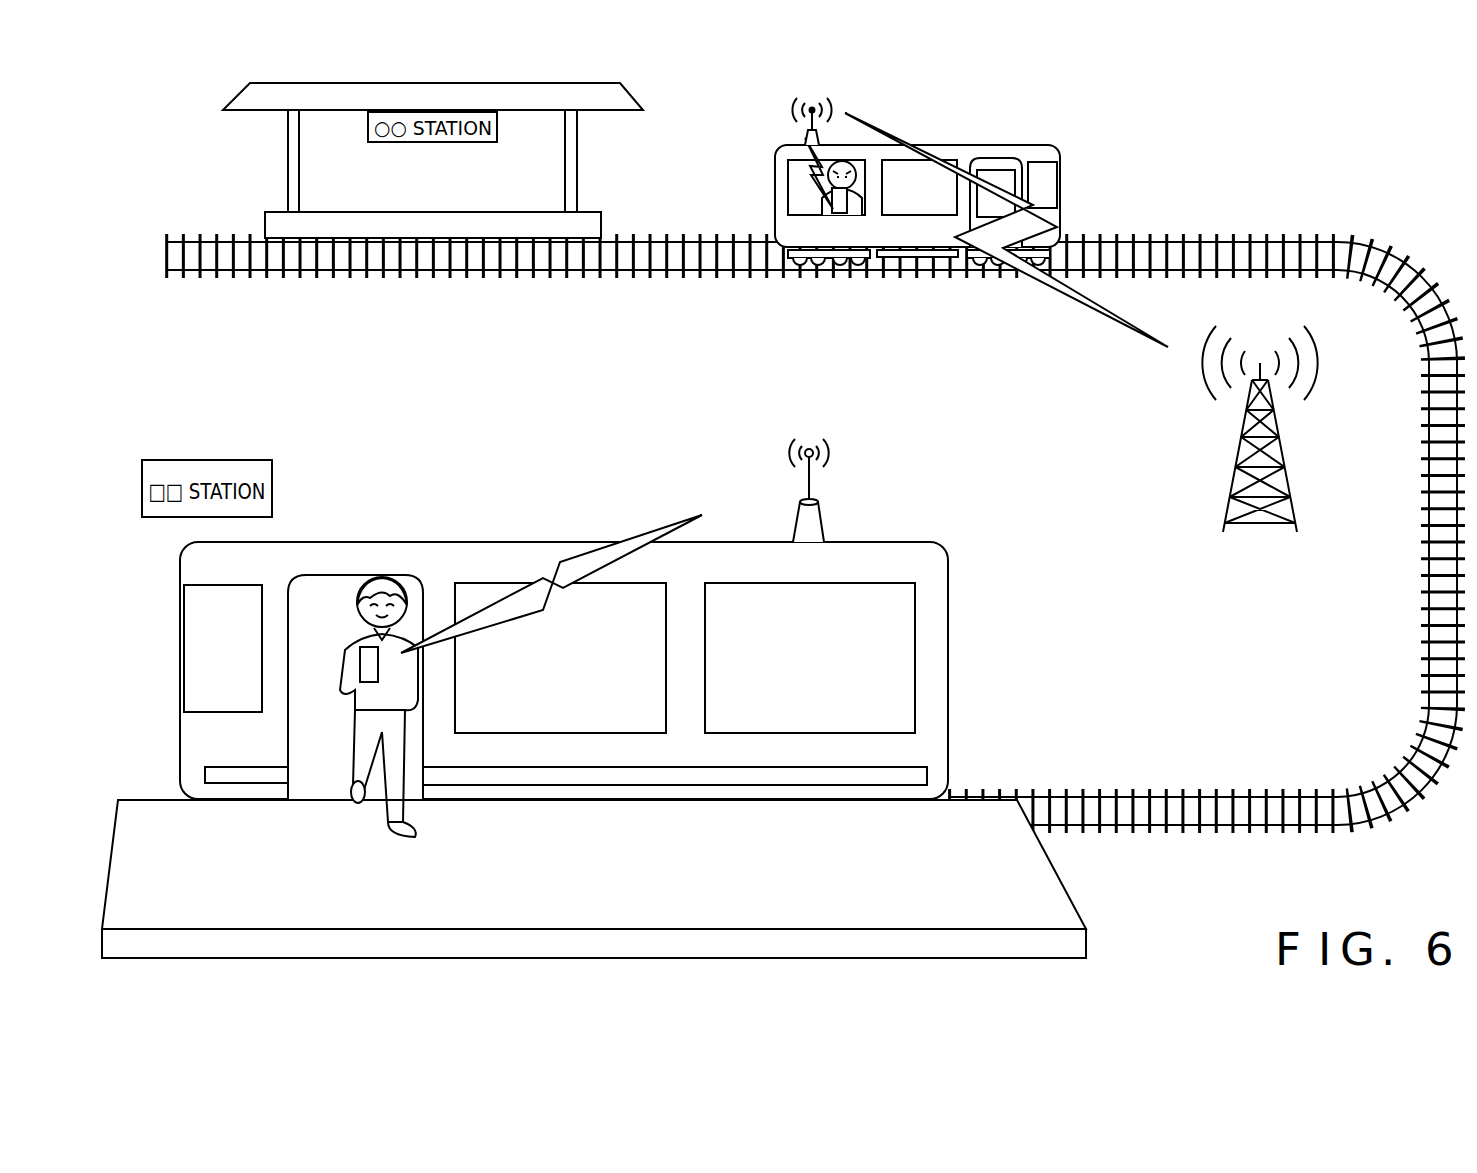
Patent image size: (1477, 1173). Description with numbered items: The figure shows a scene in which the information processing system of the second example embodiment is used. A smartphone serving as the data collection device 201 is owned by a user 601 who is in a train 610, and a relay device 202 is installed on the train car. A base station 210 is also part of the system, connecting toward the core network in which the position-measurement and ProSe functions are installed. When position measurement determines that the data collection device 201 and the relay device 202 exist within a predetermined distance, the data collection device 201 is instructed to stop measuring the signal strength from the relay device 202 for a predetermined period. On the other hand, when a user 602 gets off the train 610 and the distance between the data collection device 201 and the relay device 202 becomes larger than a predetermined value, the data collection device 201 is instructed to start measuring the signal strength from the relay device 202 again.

The data collection device 201 is at (828, 214).
The relay device 202 is at (807, 133).
The base station 210 is at (1260, 513).
The user 601 is at (857, 204).
The user 602 is at (392, 588).
The train 610 is at (502, 556).